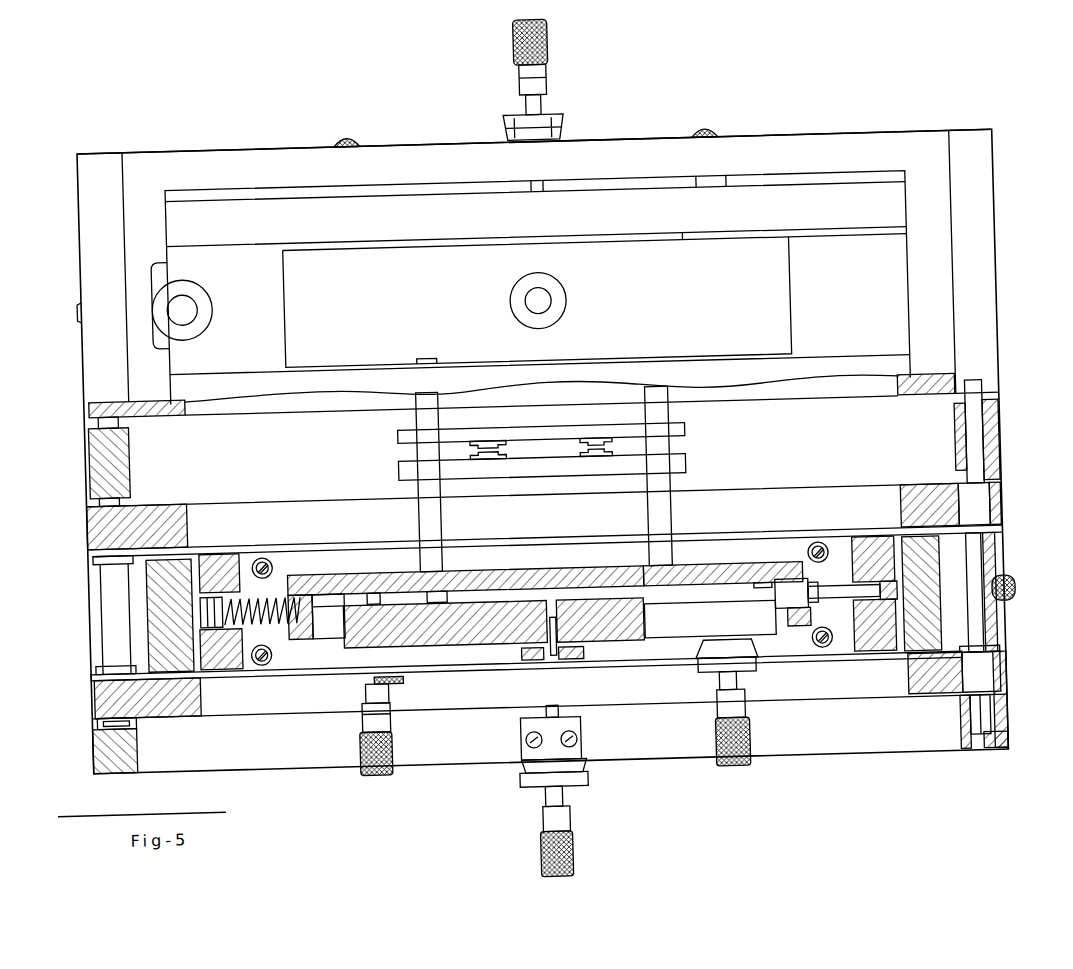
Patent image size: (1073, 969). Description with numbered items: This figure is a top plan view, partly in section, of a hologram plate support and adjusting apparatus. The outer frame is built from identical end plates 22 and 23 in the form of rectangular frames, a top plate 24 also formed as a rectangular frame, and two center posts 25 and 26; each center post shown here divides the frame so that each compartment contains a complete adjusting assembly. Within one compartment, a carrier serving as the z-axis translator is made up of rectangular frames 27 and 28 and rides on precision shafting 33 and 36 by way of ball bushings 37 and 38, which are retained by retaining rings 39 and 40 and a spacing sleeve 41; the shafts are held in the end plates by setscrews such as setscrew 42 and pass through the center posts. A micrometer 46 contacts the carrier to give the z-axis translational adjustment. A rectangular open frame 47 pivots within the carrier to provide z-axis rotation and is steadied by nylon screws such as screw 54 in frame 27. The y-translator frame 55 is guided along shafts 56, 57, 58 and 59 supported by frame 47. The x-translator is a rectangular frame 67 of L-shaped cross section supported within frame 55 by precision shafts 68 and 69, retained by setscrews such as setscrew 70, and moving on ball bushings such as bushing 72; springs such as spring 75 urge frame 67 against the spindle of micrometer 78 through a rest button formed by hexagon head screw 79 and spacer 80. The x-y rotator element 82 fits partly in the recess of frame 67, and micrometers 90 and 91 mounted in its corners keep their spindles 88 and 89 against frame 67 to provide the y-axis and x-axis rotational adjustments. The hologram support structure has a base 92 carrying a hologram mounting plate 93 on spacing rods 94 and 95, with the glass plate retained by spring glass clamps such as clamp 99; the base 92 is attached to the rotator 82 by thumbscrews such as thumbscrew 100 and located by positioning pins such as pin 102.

The end plate 22 is at (76, 211).
The end plate 23 is at (973, 259).
The top plate 24 is at (216, 153).
The center post 25 is at (993, 453).
The center post 26 is at (82, 460).
The rectangular frame 27 is at (79, 698).
The rectangular frame 28 is at (78, 533).
The shafting 33 is at (975, 724).
The shafting 36 is at (78, 728).
The ball bushing 37 is at (969, 527).
The ball bushing 38 is at (972, 693).
The retaining ring 39 is at (980, 555).
The retaining ring 40 is at (1009, 641).
The spacing sleeve 41 is at (979, 577).
The setscrew 42 is at (969, 773).
The micrometer 46 is at (517, 866).
The rectangular open frame 47 is at (128, 610).
The nylon screw 54 is at (231, 682).
The y-translator frame 55 is at (847, 569).
The shaft 56 is at (259, 660).
The shaft 57 is at (798, 657).
The shaft 58 is at (262, 574).
The shaft 59 is at (796, 572).
The rectangular frame 67 is at (328, 587).
The precision shaft 68 is at (718, 618).
The precision shaft 69 is at (265, 610).
The setscrew 70 is at (832, 586).
The ball bushing 72 is at (758, 609).
The spring 75 is at (256, 602).
The micrometer 78 is at (1004, 613).
The hexagon head screw 79 is at (817, 617).
The spacer 80 is at (852, 582).
The x-y rotator element 82 is at (602, 665).
The spindle 88 is at (373, 603).
The spindle 89 is at (713, 599).
The micrometer 90 is at (358, 786).
The micrometer 91 is at (710, 781).
The base 92 is at (426, 678).
The hologram mounting plate 93 is at (391, 482).
The spacing rod 94 is at (408, 529).
The spacing rod 95 is at (659, 529).
The spring glass clamp 99 is at (592, 469).
The thumbscrew 100 is at (371, 691).
The positioning pin 102 is at (504, 668).